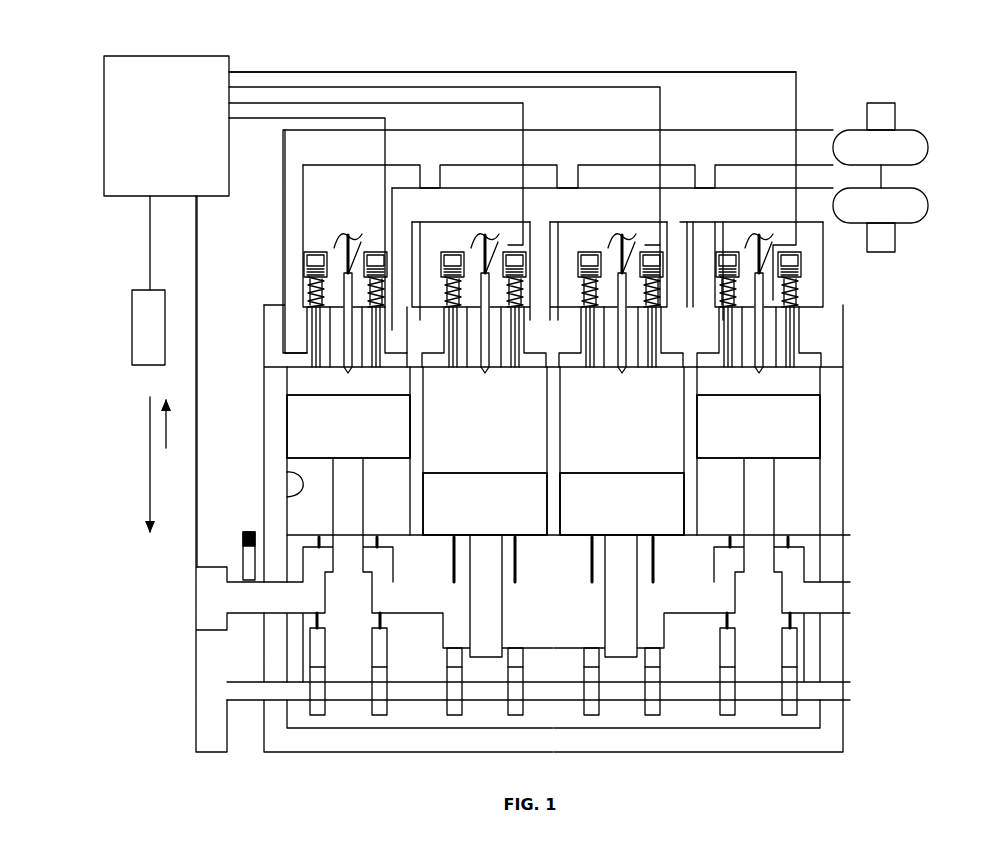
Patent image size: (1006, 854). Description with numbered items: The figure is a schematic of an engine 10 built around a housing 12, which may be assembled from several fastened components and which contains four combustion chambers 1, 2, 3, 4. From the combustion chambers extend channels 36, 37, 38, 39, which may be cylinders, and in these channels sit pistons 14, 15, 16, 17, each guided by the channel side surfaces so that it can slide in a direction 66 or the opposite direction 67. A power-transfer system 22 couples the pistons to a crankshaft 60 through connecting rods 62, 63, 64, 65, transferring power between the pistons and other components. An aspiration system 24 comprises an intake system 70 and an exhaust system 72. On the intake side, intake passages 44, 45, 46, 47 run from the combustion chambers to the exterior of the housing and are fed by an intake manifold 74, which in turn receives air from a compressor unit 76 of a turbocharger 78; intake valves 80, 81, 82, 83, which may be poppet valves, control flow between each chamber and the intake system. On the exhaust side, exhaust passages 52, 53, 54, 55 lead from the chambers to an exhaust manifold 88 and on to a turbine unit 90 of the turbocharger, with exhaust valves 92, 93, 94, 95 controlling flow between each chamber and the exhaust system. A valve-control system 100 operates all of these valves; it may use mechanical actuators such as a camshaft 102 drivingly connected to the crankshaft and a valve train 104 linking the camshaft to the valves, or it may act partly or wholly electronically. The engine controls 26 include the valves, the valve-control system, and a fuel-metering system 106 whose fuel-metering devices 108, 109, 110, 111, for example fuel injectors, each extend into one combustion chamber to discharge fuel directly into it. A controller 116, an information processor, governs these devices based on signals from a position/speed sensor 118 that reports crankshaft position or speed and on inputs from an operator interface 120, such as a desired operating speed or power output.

The engine 10 is at (884, 443).
The housing 12 is at (843, 397).
The power-transfer system 22 is at (786, 513).
The aspiration system 24 is at (923, 104).
The engine controls 26 is at (467, 235).
The channel 36 is at (287, 488).
The channel 37 is at (423, 467).
The channel 38 is at (560, 467).
The channel 39 is at (812, 392).
The intake passage 44 is at (384, 309).
The intake passage 45 is at (523, 309).
The intake passage 46 is at (660, 309).
The intake passage 47 is at (798, 309).
The exhaust passage 52 is at (307, 309).
The exhaust passage 53 is at (444, 309).
The exhaust passage 54 is at (581, 309).
The exhaust passage 55 is at (719, 309).
The crankshaft 60 is at (683, 598).
The connecting rod 62 is at (752, 495).
The connecting rod 63 is at (625, 577).
The connecting rod 64 is at (495, 577).
The connecting rod 65 is at (347, 540).
The direction 66 is at (150, 470).
The direction 67 is at (162, 443).
The intake system 70 is at (779, 212).
The exhaust system 72 is at (641, 117).
The intake manifold 74 is at (612, 205).
The compressor unit 76 is at (880, 208).
The turbocharger 78 is at (882, 94).
The intake valve 80 is at (384, 368).
The intake valve 81 is at (509, 369).
The intake valve 82 is at (651, 370).
The intake valve 83 is at (845, 352).
The exhaust manifold 88 is at (558, 241).
The turbine unit 90 is at (880, 147).
The exhaust valve 92 is at (312, 372).
The exhaust valve 93 is at (458, 368).
The exhaust valve 94 is at (589, 368).
The exhaust valve 95 is at (787, 370).
The valve-control system 100 is at (593, 245).
The camshaft 102 is at (300, 690).
The valve train 104 is at (318, 262).
The fuel-metering system 106 is at (329, 315).
The fuel-metering device 108 is at (340, 370).
The fuel-metering device 109 is at (484, 369).
The fuel-metering device 110 is at (626, 369).
The fuel-metering device 111 is at (722, 370).
The controller 116 is at (166, 126).
The position/speed sensor 118 is at (244, 556).
The operator interface 120 is at (152, 305).
The combustion chamber 1 is at (352, 385).
The combustion chamber 2 is at (485, 408).
The combustion chamber 3 is at (620, 408).
The combustion chamber 4 is at (764, 385).
The piston 14 is at (348, 426).
The piston 15 is at (485, 504).
The piston 16 is at (622, 504).
The piston 17 is at (758, 426).